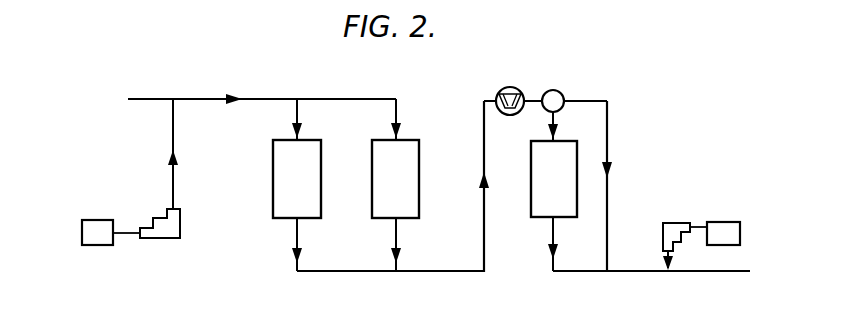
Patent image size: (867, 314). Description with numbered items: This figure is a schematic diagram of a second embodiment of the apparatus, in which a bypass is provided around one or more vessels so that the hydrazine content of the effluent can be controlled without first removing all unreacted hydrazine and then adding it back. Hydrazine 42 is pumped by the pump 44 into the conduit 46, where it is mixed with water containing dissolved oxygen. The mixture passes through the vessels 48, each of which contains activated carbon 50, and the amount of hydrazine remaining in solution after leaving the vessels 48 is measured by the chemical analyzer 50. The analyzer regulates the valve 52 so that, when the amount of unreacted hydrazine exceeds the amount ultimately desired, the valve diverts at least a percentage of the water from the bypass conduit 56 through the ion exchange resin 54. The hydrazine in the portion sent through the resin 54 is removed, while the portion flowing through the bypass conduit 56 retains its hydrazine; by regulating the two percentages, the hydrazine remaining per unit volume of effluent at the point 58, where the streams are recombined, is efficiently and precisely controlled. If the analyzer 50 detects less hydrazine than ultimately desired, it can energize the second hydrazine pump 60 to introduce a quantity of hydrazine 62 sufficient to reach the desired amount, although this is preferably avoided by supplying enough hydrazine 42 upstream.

The hydrazine 42 is at (109, 243).
The pump 44 is at (181, 216).
The conduit 46 is at (208, 99).
The vessels 48 is at (372, 210).
The activated carbon / chemical analyzer 50 is at (308, 190).
The valve 52 is at (561, 93).
The ion exchange resin 54 is at (565, 190).
The bypass conduit 56 is at (607, 204).
The point 58 is at (609, 271).
The second hydrazine pump 60 is at (664, 223).
The hydrazine 62 is at (735, 244).